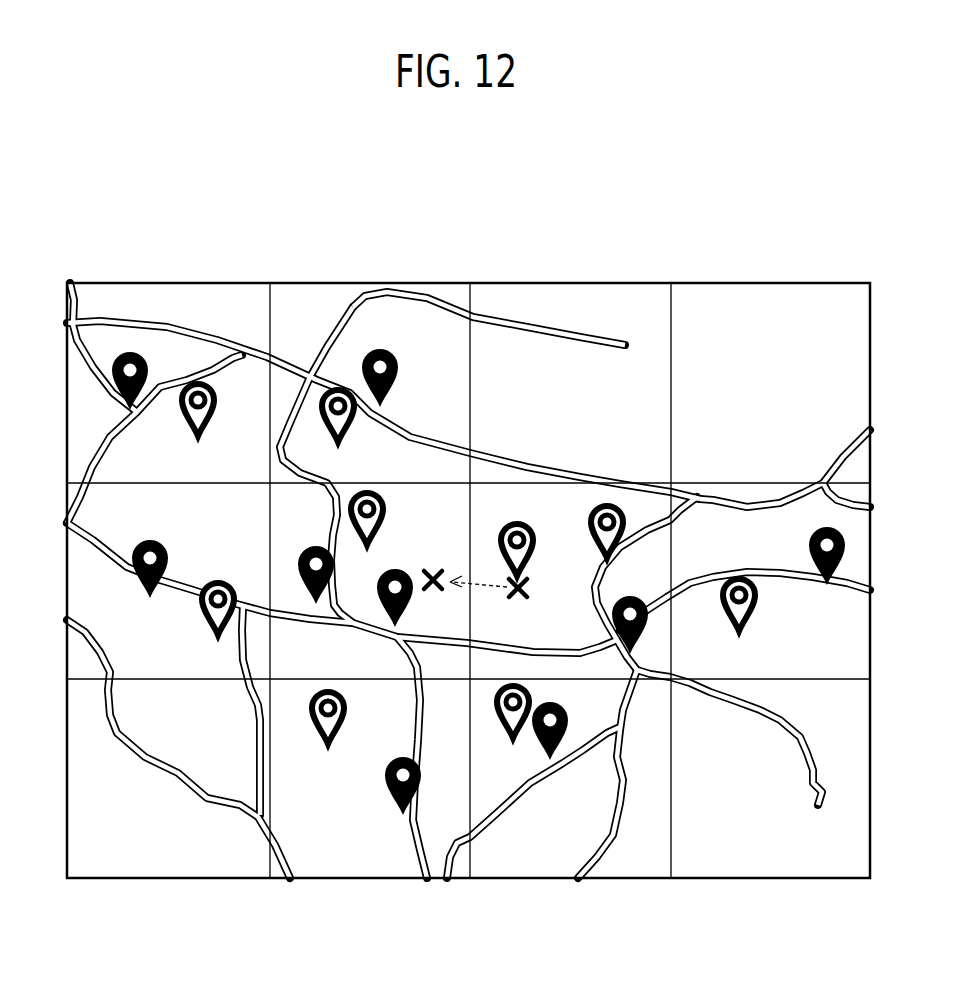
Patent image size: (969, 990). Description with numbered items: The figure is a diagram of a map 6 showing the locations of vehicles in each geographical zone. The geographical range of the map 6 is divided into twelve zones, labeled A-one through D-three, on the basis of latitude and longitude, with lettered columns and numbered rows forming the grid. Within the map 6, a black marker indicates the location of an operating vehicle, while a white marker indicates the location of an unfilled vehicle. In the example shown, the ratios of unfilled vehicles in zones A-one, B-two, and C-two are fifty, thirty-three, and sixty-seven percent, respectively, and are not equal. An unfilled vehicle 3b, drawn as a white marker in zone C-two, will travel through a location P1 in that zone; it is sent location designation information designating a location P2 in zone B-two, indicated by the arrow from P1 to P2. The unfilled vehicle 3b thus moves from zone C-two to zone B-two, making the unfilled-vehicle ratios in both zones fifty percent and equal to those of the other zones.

The map 6 is at (783, 197).
The unfilled vehicle 3b is at (517, 521).
The location P1 is at (523, 603).
The location P2 is at (431, 598).